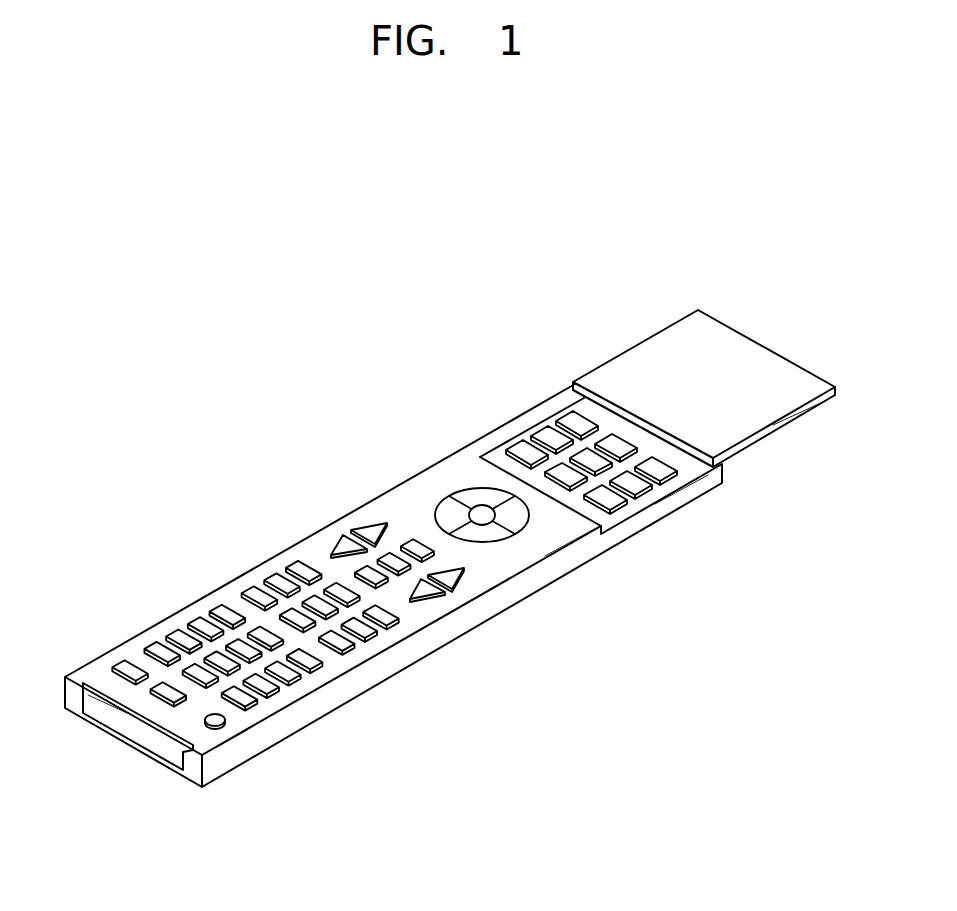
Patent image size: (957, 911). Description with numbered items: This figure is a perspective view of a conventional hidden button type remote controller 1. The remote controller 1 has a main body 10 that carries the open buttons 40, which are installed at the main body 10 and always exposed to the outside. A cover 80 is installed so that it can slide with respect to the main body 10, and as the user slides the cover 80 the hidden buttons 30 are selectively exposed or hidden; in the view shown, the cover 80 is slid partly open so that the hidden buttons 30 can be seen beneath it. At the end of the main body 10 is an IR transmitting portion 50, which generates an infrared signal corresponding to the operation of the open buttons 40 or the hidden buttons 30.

The remote controller 1 is at (366, 436).
The main body 10 is at (568, 566).
The hidden buttons 30 is at (553, 436).
The open buttons 40 is at (278, 582).
The IR transmitting portion 50 is at (153, 735).
The cover 80 is at (666, 349).